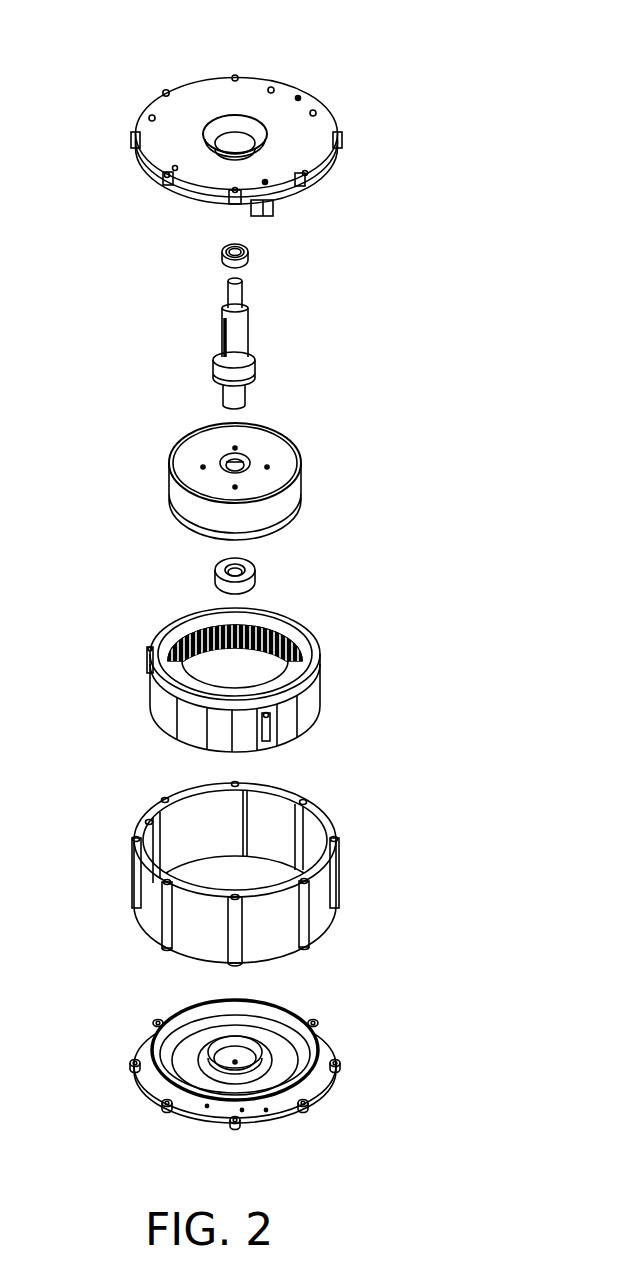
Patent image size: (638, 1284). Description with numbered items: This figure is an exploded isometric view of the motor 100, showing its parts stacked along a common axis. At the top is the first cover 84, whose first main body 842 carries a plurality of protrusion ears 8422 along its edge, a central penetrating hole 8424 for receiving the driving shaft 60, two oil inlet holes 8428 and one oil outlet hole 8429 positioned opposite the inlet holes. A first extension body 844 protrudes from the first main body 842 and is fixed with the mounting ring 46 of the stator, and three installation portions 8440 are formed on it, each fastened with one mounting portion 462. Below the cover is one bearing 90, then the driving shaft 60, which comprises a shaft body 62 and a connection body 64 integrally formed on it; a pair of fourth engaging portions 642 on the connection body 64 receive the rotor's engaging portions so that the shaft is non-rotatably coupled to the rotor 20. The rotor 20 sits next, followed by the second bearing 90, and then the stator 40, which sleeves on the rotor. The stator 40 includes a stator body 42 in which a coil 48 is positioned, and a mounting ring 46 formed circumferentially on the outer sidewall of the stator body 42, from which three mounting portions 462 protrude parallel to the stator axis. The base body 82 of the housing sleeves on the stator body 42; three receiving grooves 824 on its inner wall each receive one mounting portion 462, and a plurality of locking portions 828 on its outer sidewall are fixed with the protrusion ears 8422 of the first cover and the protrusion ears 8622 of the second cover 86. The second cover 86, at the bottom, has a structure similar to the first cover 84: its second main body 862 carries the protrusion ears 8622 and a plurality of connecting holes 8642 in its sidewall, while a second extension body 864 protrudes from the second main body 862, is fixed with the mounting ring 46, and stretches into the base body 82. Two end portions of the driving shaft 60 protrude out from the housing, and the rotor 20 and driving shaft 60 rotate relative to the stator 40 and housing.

The motor 100 is at (248, 30).
The first cover 84 is at (434, 158).
The first main body 842 is at (312, 146).
The protrusion ears 8422 is at (165, 91).
The penetrating hole 8424 is at (236, 138).
The oil inlet holes 8428 is at (316, 108).
The oil outlet hole 8429 is at (147, 167).
The first extension body 844 is at (290, 197).
The installation portions 8440 is at (265, 212).
The driving shaft 60 is at (330, 283).
The shaft body 62 is at (245, 293).
The connection body 64 is at (243, 338).
The fourth engaging portions 642 is at (223, 333).
The rotor 20 is at (304, 438).
The bearing 90 is at (258, 567).
The stator 40 is at (307, 650).
The stator body 42 is at (273, 633).
The coil 48 is at (182, 640).
The mounting ring 46 is at (305, 705).
The mounting portions 462 is at (268, 742).
The base body 82 is at (318, 823).
The receiving grooves 824 is at (148, 820).
The locking portions 828 is at (338, 877).
The second cover 86 is at (410, 982).
The second extension body 864 is at (308, 1025).
The second main body 862 is at (325, 1055).
The protrusion ears 8622 is at (310, 1103).
The connecting holes 8642 is at (207, 1108).